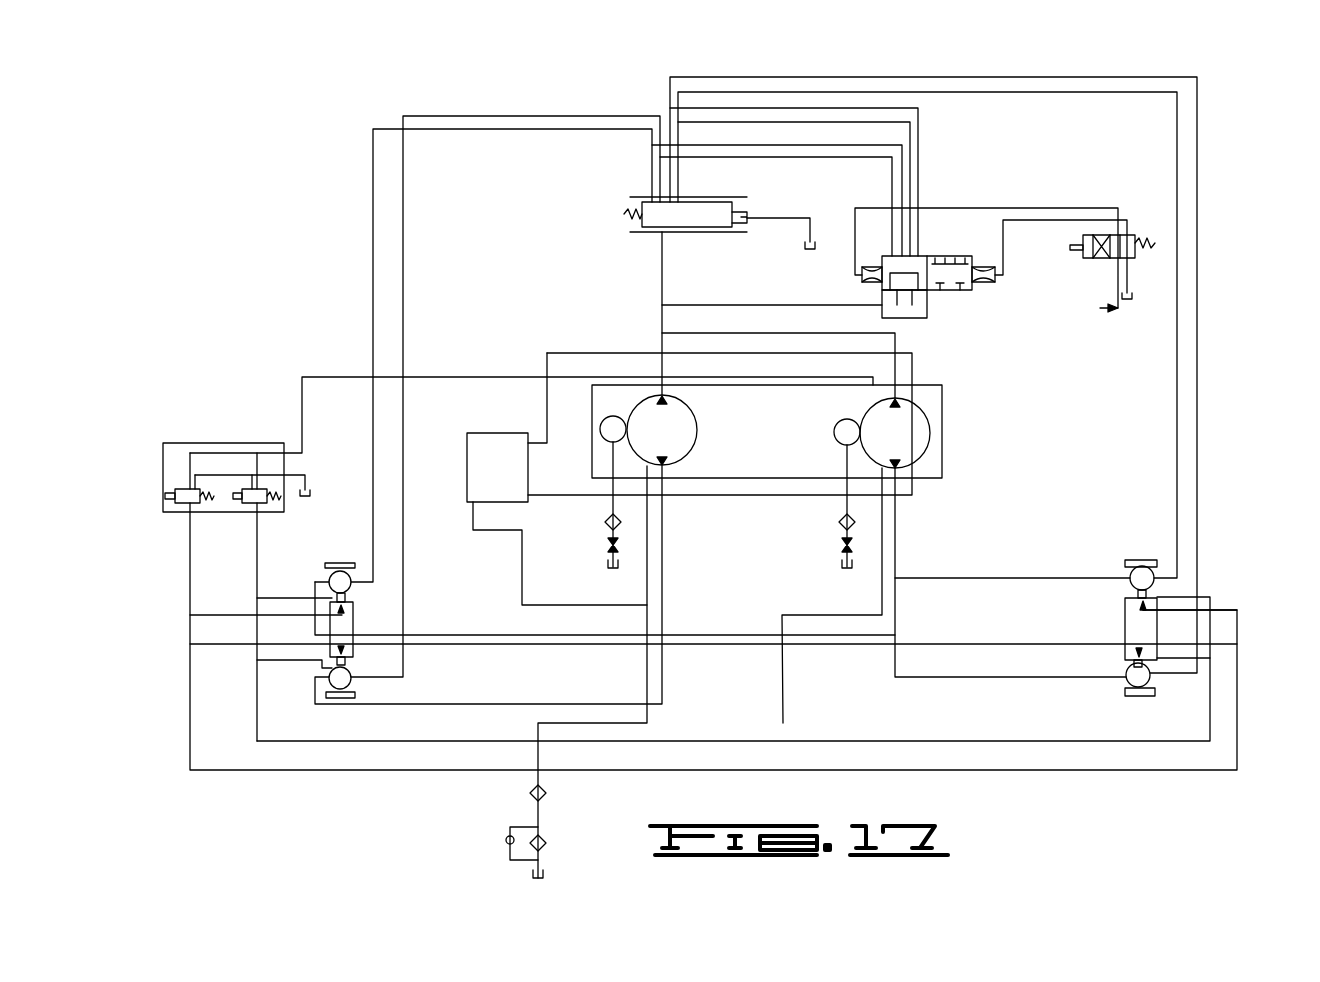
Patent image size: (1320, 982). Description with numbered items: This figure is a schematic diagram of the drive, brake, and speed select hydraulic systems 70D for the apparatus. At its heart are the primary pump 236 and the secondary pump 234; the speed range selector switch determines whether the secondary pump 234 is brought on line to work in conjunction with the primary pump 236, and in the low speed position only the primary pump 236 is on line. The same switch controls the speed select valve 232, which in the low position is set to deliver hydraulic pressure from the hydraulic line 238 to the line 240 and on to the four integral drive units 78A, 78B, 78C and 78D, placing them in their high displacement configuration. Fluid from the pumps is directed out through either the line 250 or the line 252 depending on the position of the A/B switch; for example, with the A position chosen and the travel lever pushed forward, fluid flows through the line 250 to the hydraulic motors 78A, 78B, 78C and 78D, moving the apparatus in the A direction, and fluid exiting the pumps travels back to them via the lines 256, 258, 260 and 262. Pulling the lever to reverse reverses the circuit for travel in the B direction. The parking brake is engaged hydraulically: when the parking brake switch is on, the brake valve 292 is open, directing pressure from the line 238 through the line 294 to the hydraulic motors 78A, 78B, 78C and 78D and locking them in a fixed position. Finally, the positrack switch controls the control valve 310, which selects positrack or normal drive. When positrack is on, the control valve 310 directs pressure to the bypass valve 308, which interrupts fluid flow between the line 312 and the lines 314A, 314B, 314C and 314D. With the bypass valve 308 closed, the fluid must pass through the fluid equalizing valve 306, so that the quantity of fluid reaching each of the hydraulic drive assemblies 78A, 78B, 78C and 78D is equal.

The hydraulic system 70D is at (1203, 162).
The integral drive unit 78A is at (328, 577).
The integral drive unit 78B is at (331, 682).
The integral drive unit 78C is at (1155, 570).
The integral drive unit 78D is at (1150, 690).
The speed select valve 232 is at (250, 488).
The secondary pump 234 is at (933, 423).
The primary pump 236 is at (703, 433).
The hydraulic line 238 is at (342, 376).
The line 240 is at (257, 540).
The line 250 is at (664, 560).
The line 252 is at (660, 322).
The line 256 is at (473, 115).
The line 258 is at (547, 127).
The line 260 is at (750, 75).
The line 262 is at (848, 90).
The brake valve 292 is at (182, 488).
The line 294 is at (188, 712).
The fluid equalizing valve 306 is at (628, 213).
The bypass valve 308 is at (958, 255).
The control valve 310 is at (1137, 236).
The line 312 is at (697, 306).
The line 314A is at (863, 106).
The line 314B is at (905, 120).
The line 314C is at (902, 150).
The line 314D is at (893, 180).